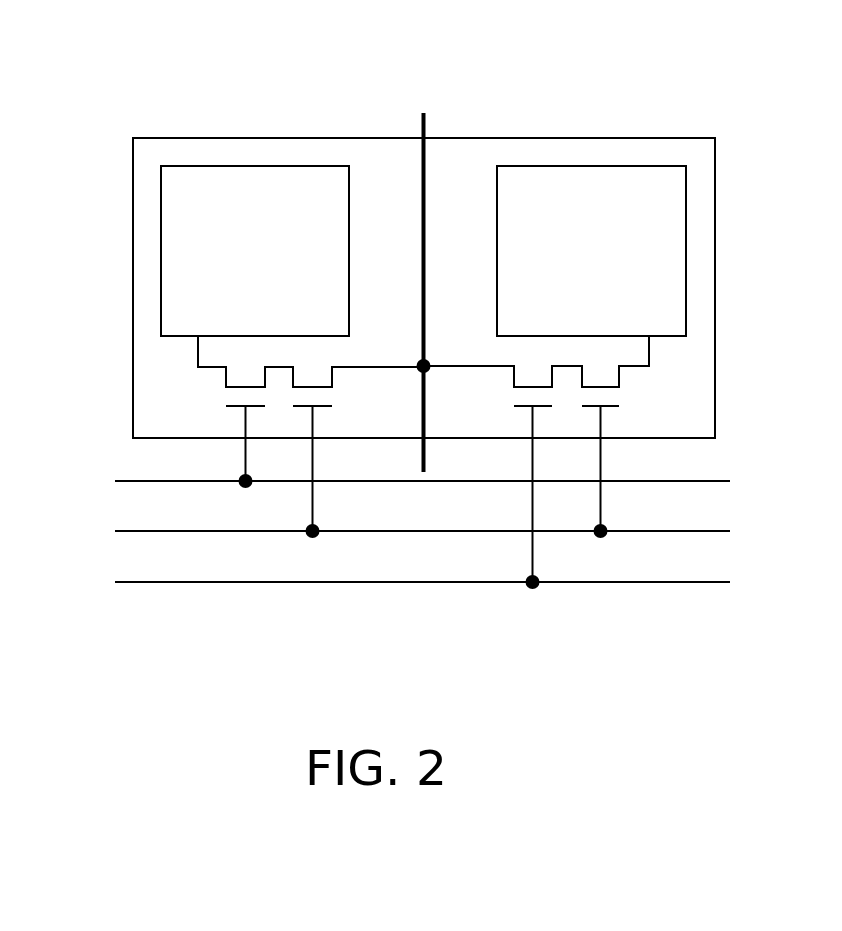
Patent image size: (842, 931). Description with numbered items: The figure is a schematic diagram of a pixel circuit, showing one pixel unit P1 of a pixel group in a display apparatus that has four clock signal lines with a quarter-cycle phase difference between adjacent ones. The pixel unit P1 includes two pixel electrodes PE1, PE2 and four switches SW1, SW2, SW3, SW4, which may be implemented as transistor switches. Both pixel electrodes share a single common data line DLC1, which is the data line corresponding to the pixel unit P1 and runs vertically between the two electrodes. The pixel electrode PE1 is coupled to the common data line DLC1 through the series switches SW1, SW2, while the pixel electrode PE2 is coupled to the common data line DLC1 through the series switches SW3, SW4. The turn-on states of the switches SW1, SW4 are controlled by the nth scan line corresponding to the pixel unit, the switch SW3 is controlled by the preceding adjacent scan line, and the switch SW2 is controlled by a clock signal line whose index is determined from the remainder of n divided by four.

The pixel unit P1 is at (188, 138).
The pixel electrode PE1 is at (593, 166).
The pixel electrode PE2 is at (257, 166).
The common data line DLC1 is at (428, 166).
The switch SW1 is at (599, 438).
The switch SW2 is at (530, 463).
The switch SW3 is at (243, 413).
The switch SW4 is at (311, 438).